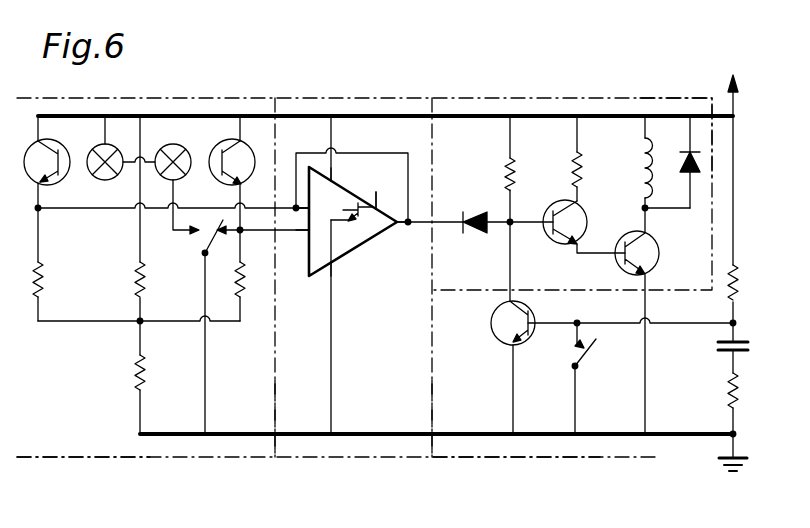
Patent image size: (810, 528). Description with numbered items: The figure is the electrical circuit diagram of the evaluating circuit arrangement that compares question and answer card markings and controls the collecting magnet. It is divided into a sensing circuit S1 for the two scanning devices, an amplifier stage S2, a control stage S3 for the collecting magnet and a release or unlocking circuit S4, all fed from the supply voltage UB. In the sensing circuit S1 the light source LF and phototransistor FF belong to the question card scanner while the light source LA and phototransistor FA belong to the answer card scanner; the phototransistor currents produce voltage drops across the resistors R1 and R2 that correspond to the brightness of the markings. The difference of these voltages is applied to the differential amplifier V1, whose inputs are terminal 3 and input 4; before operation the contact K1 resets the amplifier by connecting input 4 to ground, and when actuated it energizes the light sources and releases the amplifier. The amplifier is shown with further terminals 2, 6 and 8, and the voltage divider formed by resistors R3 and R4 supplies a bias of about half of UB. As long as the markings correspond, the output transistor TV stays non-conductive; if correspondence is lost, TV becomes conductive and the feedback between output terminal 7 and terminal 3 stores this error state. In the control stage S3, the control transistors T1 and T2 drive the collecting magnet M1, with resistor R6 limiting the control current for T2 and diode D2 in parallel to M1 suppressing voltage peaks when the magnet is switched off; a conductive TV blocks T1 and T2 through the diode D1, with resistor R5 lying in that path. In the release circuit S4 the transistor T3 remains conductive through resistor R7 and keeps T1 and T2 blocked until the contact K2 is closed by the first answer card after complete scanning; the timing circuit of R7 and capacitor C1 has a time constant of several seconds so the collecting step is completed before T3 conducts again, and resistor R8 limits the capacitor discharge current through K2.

The phototransistor FF is at (55, 162).
The light source LF is at (121, 148).
The light source LA is at (173, 180).
The phototransistor FA is at (226, 189).
The resistor R1 is at (56, 264).
The resistor R2 is at (226, 290).
The resistor R3 is at (124, 279).
The resistor R4 is at (122, 372).
The resistor R5 is at (494, 153).
The resistor R6 is at (560, 158).
The resistor R7 is at (753, 279).
The resistor R8 is at (716, 388).
The contact K1 is at (208, 327).
The contact K2 is at (595, 378).
The differential amplifier V1 is at (352, 212).
The output transistor TV is at (348, 210).
The amplifier terminal 2 is at (337, 173).
The amplifier terminal 3 is at (296, 199).
The amplifier input 4 is at (300, 242).
The amplifier terminal 6 is at (323, 279).
The amplifier output terminal 7 is at (403, 234).
The amplifier terminal 8 is at (381, 193).
The diode D1 is at (472, 210).
The diode D2 is at (680, 162).
The control transistor T1 is at (581, 222).
The control transistor T2 is at (653, 241).
The transistor T3 is at (498, 367).
The collecting magnet M1 is at (640, 163).
The capacitor C1 is at (717, 347).
The supply voltage UB is at (735, 85).
The sensing circuit S1 is at (66, 455).
The amplifier stage S2 is at (330, 455).
The control stage S3 is at (697, 96).
The release circuit S4 is at (546, 456).